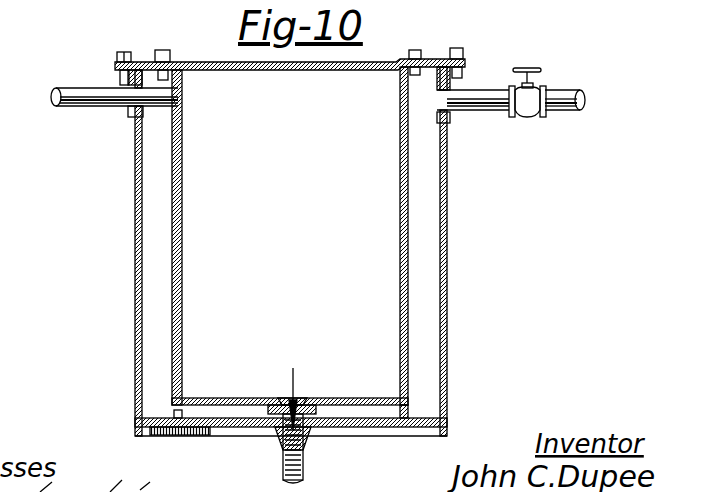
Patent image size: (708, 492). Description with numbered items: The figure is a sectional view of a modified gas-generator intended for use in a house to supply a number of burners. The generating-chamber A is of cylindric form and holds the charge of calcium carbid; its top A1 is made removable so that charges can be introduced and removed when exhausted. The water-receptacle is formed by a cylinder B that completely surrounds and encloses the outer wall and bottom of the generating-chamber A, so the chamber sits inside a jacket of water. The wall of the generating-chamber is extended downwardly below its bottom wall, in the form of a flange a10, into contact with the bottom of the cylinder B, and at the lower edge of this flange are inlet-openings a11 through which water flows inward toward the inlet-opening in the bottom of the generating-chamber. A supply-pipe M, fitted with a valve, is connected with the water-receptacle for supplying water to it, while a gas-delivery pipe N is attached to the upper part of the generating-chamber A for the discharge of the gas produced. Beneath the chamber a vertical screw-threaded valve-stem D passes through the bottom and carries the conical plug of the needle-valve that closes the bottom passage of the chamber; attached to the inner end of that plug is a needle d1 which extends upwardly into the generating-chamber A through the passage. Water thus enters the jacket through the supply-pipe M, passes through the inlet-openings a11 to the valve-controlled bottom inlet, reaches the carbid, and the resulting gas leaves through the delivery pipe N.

The top of the generating-chamber A1 is at (371, 62).
The generating-chamber A is at (408, 220).
The water-receptacle cylinder B is at (447, 263).
The gas-delivery pipe N is at (100, 66).
The supply-pipe M is at (508, 62).
The flange a10 is at (407, 407).
The inlet-openings a11 is at (407, 414).
The valve-stem D is at (304, 464).
The needle d1 is at (296, 372).